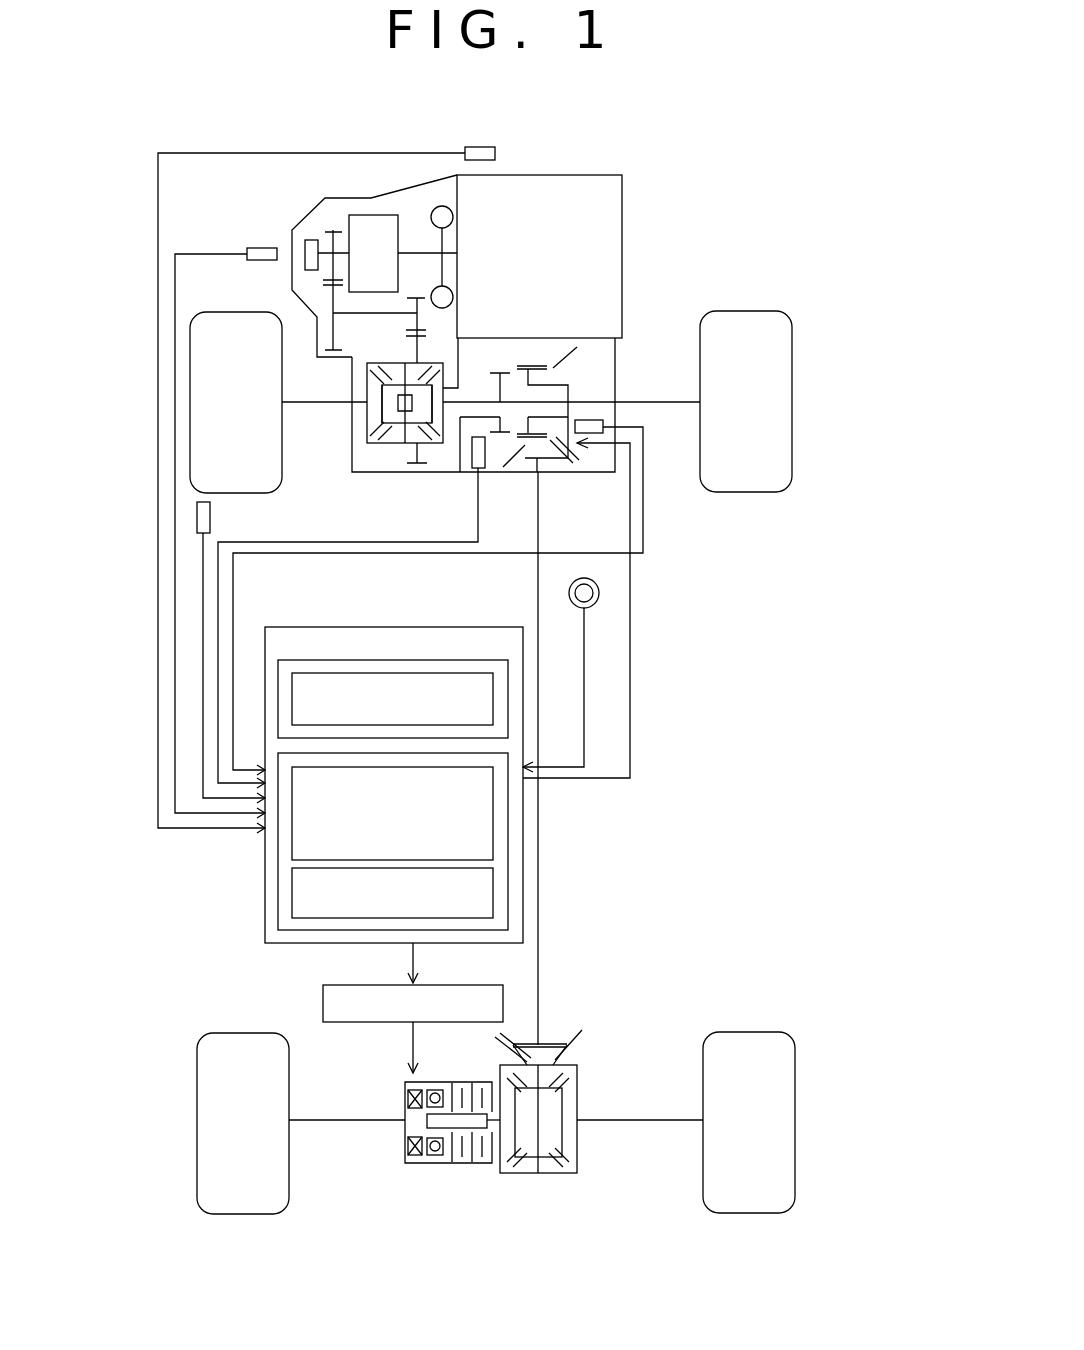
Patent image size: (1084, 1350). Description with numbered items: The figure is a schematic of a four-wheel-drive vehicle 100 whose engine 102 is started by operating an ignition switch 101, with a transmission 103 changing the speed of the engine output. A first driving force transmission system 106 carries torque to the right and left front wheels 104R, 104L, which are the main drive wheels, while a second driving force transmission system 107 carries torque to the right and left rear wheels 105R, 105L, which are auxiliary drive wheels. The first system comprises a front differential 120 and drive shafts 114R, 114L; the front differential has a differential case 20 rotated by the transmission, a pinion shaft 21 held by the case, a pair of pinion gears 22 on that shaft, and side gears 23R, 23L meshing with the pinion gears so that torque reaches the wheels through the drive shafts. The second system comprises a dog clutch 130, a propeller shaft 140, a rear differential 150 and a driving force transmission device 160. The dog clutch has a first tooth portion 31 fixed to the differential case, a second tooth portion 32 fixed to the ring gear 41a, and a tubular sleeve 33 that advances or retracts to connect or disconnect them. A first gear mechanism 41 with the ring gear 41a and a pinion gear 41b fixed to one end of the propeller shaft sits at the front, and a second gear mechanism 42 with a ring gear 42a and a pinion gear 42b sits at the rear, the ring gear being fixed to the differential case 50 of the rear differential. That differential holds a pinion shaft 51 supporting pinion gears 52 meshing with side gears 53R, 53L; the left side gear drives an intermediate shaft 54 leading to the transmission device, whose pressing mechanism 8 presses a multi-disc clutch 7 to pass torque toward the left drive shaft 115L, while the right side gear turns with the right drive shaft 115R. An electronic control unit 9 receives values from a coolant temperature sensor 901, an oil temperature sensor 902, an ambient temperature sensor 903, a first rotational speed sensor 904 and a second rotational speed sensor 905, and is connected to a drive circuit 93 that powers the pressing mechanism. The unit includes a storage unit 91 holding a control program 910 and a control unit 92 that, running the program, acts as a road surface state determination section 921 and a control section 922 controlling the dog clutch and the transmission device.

The four-wheel-drive vehicle 100 is at (703, 112).
The ignition switch 101 is at (605, 598).
The engine 102 is at (512, 176).
The transmission 103 is at (352, 190).
The left front wheel 104L is at (190, 400).
The right front wheel 104R is at (792, 394).
The left rear wheel 105L is at (197, 1121).
The right rear wheel 105R is at (795, 1116).
The first driving force transmission system 106 is at (640, 328).
The second driving force transmission system 107 is at (700, 593).
The left drive shaft 114L is at (340, 399).
The right drive shaft 114R is at (661, 388).
The left drive shaft 115L is at (379, 1125).
The right drive shaft 115R is at (621, 1123).
The front differential 120 is at (333, 455).
The dog clutch 130 is at (540, 352).
The propeller shaft 140 is at (540, 905).
The rear differential 150 is at (590, 1160).
The driving force transmission device 160 is at (379, 1179).
The multi-disc clutch 7 is at (452, 1175).
The pressing mechanism 8 is at (412, 1175).
The electronic control unit 9 is at (313, 628).
The storage unit 91 is at (392, 660).
The control program 910 is at (470, 673).
The control unit 92 is at (278, 862).
The road surface state determination section 921 is at (493, 805).
The control section 922 is at (493, 893).
The drive circuit 93 is at (448, 982).
The coolant temperature sensor 901 is at (483, 146).
The oil temperature sensor 902 is at (255, 248).
The ambient temperature sensor 903 is at (197, 516).
The first rotational speed sensor 904 is at (480, 473).
The second rotational speed sensor 905 is at (601, 420).
The differential case 20 is at (428, 474).
The pinion shaft 21 is at (403, 433).
The pinion gears 22 is at (395, 372).
The left side gear 23L is at (368, 412).
The right side gear 23R is at (445, 411).
The first tooth portion 31 is at (496, 370).
The second tooth portion 32 is at (507, 362).
The tubular sleeve 33 is at (525, 362).
The first gear mechanism 41 is at (714, 497).
The ring gear 41a is at (565, 450).
The pinion gear 41b is at (555, 465).
The second gear mechanism 42 is at (596, 1006).
The ring gear 42a is at (515, 1040).
The pinion gear 42b is at (557, 1048).
The differential case 50 is at (560, 1149).
The pinion shaft 51 is at (562, 1118).
The pinion gears 52 is at (553, 1087).
The left side gear 53L is at (505, 1147).
The right side gear 53R is at (554, 1100).
The intermediate shaft 54 is at (498, 1108).